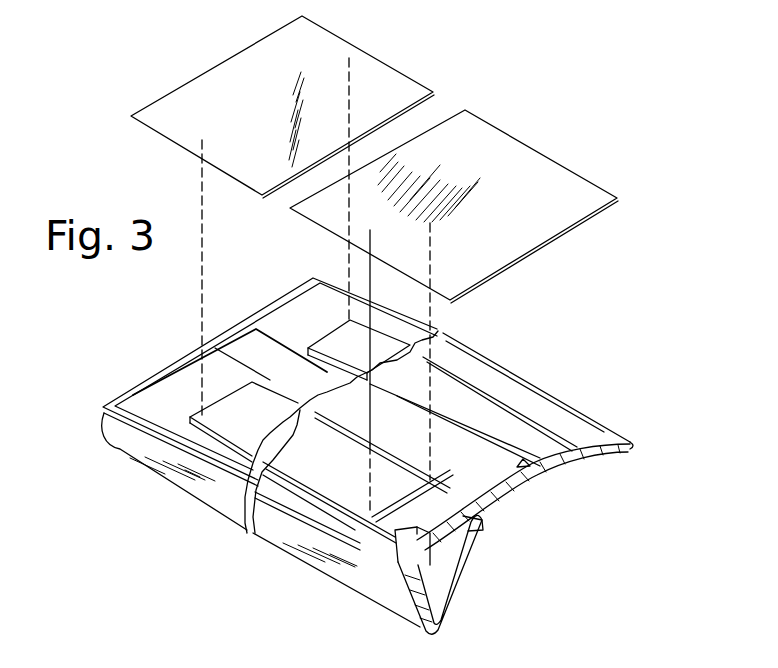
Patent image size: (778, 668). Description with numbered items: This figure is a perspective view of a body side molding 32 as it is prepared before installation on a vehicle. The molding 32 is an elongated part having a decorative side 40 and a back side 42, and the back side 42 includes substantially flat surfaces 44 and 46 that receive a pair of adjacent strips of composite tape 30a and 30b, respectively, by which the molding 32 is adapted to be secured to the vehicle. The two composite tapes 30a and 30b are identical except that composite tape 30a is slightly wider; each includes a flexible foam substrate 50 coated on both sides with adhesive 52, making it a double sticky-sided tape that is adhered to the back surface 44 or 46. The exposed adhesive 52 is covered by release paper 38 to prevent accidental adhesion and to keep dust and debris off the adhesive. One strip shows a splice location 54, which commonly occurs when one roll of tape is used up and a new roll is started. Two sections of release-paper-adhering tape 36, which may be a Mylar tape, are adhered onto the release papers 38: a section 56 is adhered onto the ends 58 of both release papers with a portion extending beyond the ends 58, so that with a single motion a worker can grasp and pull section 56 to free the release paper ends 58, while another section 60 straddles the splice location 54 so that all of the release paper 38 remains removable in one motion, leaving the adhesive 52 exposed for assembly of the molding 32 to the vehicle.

The composite tape 30a is at (213, 440).
The composite tape 30b is at (478, 378).
The molding 32 is at (478, 596).
The release-paper-adhering tape 36 is at (383, 156).
The release paper 38 is at (348, 478).
The decorative side 40 is at (477, 556).
The back side 42 is at (583, 437).
The flat surface 44 is at (520, 496).
The flat surface 46 is at (597, 457).
The flexible foam substrate 50 is at (556, 472).
The adhesive 52 is at (405, 553).
The splice location 54 is at (397, 532).
The section of release-paper-adhering tape 56 is at (383, 62).
The release paper ends 58 is at (325, 338).
The section of release-paper-adhering tape 60 is at (513, 132).